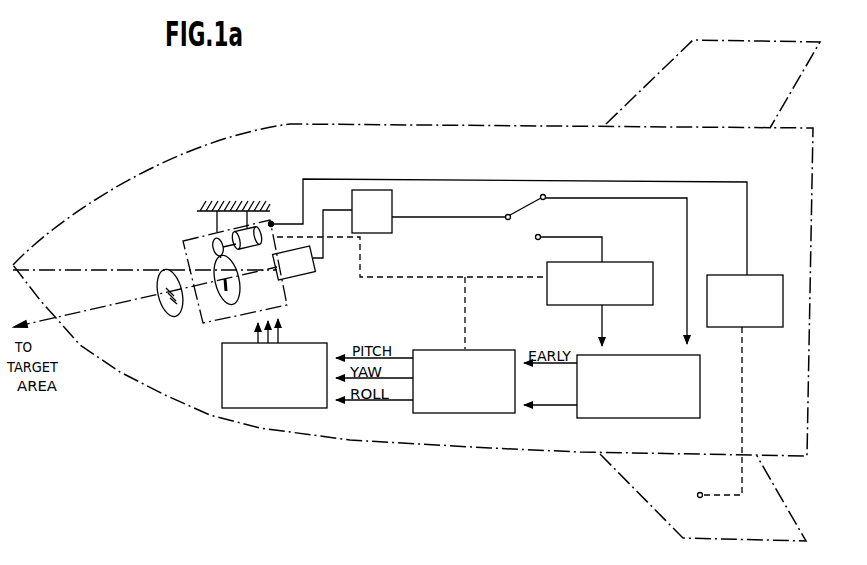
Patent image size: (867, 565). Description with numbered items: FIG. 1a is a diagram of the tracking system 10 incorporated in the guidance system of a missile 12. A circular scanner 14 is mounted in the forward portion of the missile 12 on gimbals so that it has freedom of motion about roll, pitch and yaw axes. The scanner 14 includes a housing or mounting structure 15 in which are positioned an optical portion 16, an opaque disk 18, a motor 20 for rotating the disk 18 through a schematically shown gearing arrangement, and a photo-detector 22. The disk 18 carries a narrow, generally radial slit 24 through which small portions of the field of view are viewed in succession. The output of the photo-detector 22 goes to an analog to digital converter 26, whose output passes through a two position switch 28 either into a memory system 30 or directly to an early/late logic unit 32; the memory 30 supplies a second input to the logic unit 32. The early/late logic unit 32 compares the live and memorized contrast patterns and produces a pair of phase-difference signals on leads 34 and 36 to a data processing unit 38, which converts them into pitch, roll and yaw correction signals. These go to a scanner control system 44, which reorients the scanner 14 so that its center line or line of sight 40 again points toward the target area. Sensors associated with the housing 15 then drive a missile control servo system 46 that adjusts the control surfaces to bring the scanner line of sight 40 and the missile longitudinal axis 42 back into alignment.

The tracking system 10 is at (394, 315).
The missile 12 is at (262, 128).
The circular scanner 14 is at (185, 368).
The housing or mounting structure 15 is at (185, 242).
The optical portion 16 is at (159, 287).
The opaque disk 18 is at (238, 290).
The motor 20 is at (226, 236).
The photo-detector 22 is at (293, 280).
The radial slit 24 is at (222, 288).
The analog to digital converter 26 is at (392, 197).
The two position switch 28 is at (535, 221).
The memory system 30 is at (547, 270).
The early/late logic unit 32 is at (700, 405).
The lead 34 is at (588, 327).
The lead 36 is at (546, 406).
The data processing unit 38 is at (450, 414).
The scanner center line 40 is at (110, 309).
The longitudinal axis 42 is at (100, 270).
The scanner control system 44 is at (222, 386).
The missile control servo system 46 is at (728, 275).